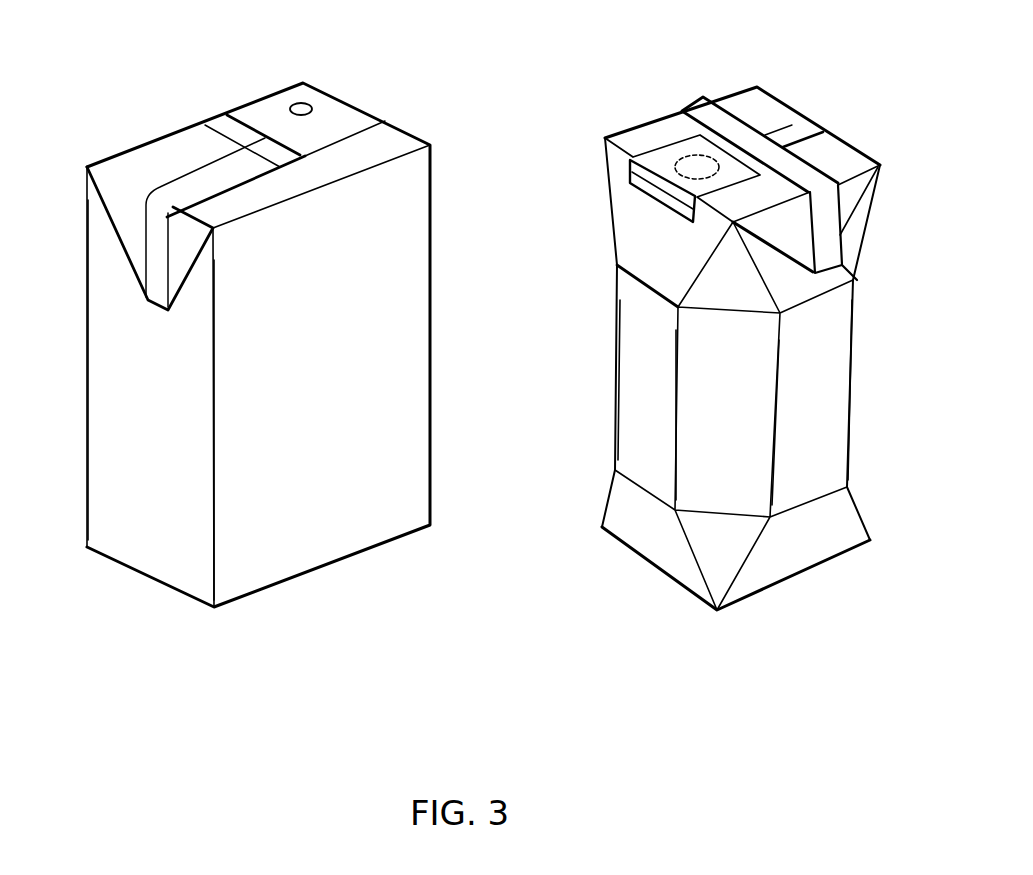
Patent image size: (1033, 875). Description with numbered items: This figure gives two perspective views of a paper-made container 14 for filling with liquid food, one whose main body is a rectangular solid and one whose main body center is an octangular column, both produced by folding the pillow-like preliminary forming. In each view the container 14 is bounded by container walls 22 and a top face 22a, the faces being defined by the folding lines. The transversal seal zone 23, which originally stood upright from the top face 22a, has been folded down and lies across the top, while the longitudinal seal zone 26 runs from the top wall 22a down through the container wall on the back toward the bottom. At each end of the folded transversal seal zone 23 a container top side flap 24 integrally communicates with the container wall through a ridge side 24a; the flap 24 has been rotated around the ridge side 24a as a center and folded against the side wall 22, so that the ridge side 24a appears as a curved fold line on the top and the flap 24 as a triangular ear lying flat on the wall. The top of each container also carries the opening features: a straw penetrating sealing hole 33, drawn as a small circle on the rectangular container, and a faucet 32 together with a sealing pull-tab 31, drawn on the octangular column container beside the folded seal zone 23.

The container 14 is at (440, 327).
The container wall 22 is at (470, 390).
The top face 22a is at (860, 132).
The transversal seal zone 23 is at (330, 128).
The flap 24 is at (132, 233).
The ridge side 24a is at (122, 183).
The longitudinal seal zone 26 is at (228, 125).
The sealing pull-tab 31 is at (663, 163).
The faucet 32 is at (694, 164).
The straw penetrating sealing hole 33 is at (300, 104).